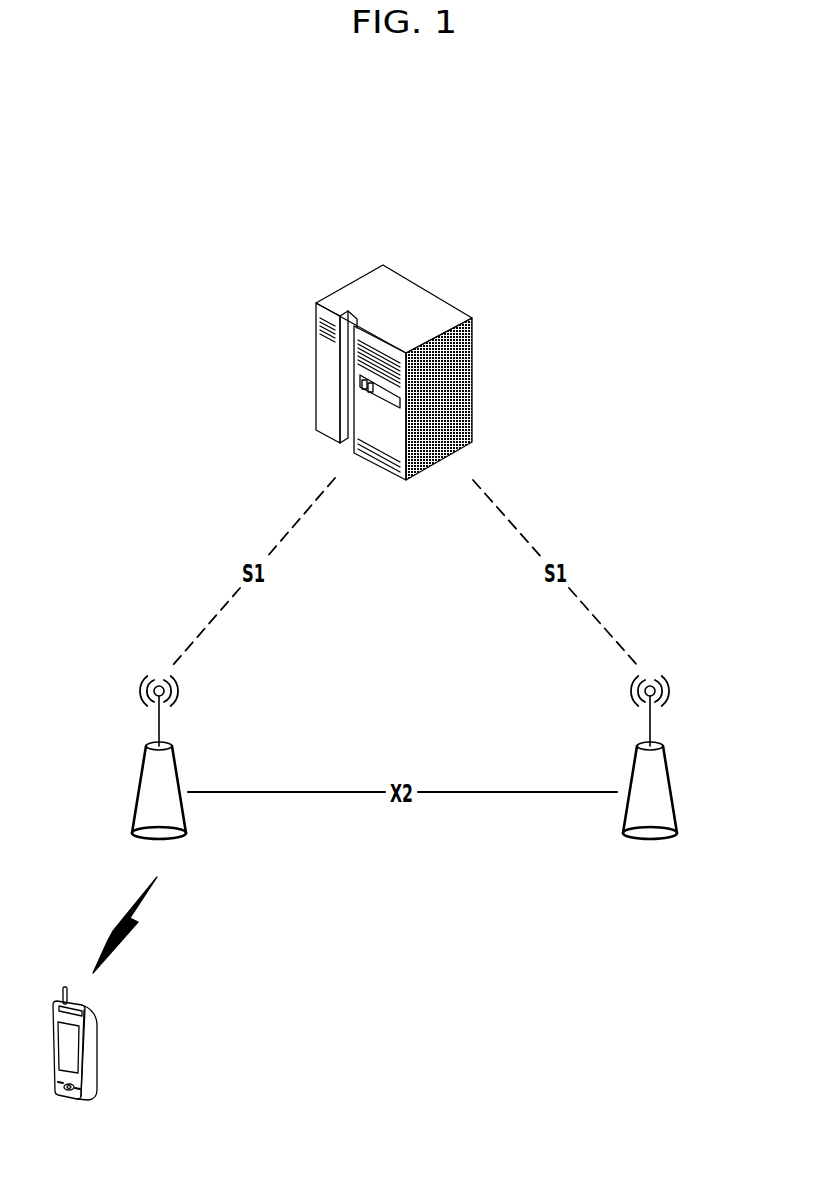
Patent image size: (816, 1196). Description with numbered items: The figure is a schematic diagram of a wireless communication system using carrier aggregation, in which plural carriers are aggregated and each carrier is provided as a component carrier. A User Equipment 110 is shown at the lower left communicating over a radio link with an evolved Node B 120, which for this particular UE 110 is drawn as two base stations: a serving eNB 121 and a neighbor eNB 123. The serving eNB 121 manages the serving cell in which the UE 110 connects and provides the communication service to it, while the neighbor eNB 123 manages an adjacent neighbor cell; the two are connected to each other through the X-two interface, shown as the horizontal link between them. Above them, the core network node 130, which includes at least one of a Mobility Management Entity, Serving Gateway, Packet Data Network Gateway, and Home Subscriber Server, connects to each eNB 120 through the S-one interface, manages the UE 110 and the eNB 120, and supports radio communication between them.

The User Equipment (UE) 110 is at (80, 1100).
The evolved Node B (eNB) 120 is at (404, 839).
The serving eNB 121 is at (159, 843).
The neighbor eNB 123 is at (610, 813).
The Core Network node 130 is at (473, 377).